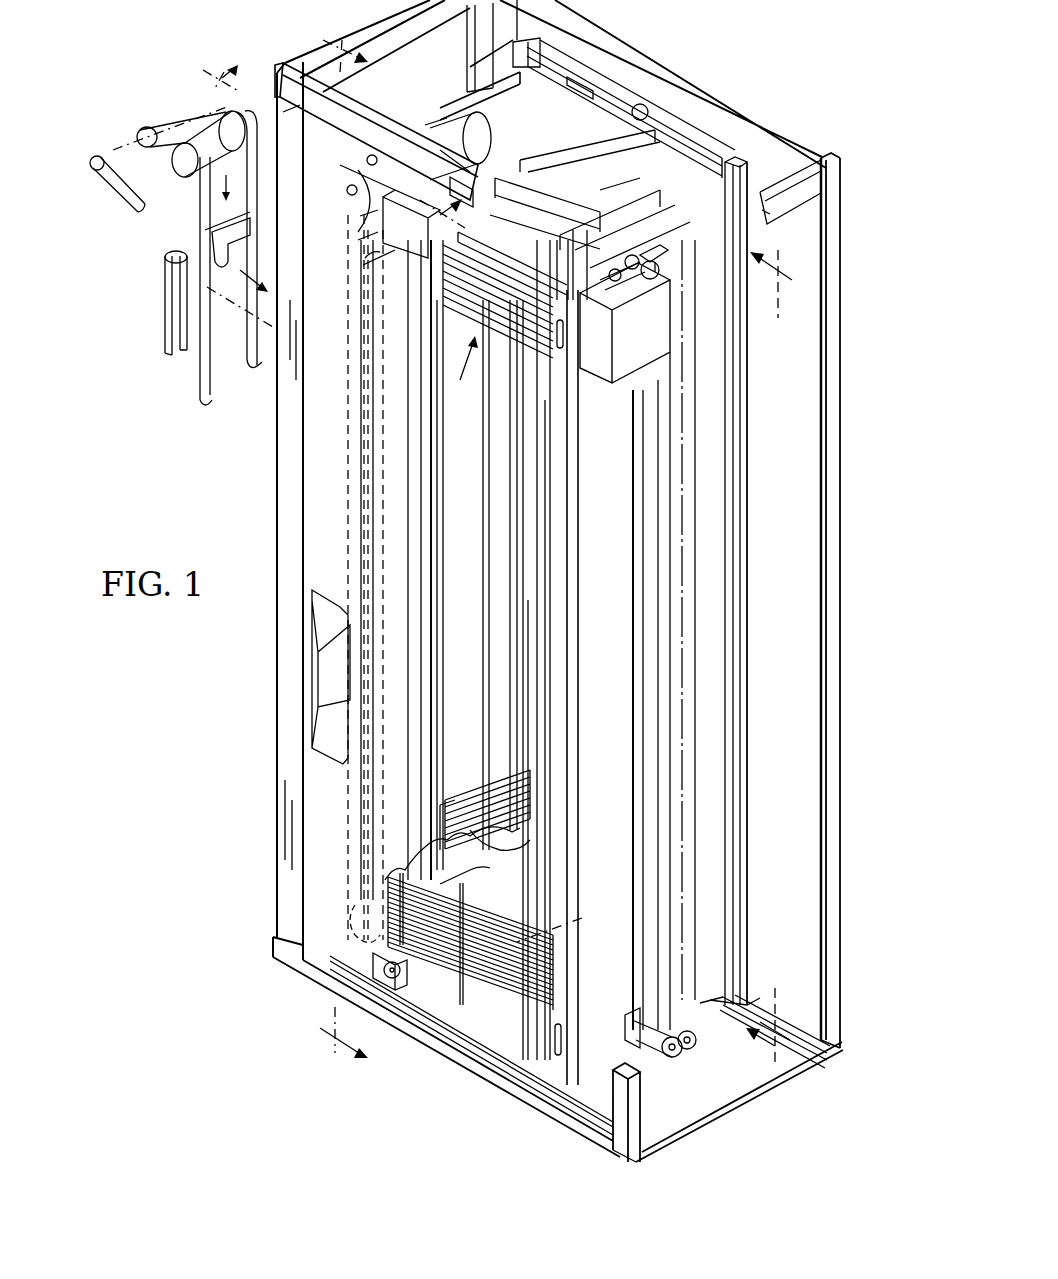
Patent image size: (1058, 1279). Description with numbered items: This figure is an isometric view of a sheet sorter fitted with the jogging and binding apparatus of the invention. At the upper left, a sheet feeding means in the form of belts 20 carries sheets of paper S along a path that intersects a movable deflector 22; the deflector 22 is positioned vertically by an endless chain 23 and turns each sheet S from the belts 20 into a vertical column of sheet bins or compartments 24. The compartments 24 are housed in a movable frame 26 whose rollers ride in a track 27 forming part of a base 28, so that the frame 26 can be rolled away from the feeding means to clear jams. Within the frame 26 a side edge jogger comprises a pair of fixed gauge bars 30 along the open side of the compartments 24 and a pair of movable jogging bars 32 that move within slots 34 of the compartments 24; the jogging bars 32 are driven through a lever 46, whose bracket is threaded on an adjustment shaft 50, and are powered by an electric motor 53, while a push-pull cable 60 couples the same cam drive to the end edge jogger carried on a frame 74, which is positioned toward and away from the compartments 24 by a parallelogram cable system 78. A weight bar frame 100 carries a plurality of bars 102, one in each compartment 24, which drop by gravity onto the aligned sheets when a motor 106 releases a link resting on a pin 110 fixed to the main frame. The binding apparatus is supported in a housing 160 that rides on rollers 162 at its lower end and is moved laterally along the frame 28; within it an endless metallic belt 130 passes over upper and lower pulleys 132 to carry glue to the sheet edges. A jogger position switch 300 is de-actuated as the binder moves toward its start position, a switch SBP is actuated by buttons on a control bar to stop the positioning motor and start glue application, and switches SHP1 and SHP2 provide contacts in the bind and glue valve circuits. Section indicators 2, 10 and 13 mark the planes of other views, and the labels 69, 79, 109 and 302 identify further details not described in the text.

The section line 10- 10 is at (337, 541).
The section line 13-13 / sheet path 13 is at (295, 226).
The switch SBP is at (283, 112).
The sheets of paper S is at (197, 107).
The belts 20 is at (210, 395).
The movable deflector 22 is at (240, 290).
The endless chain 23 is at (165, 323).
The jogger position switch 300 is at (358, 162).
The switch SHP-2 SHP2 is at (361, 216).
The switch SHP-1 SHP1 is at (358, 240).
The upper and lower pulleys 132 is at (360, 266).
The endless metallic belt 130 is at (348, 525).
The top beam 109 is at (403, 160).
The weight bar motor 106 is at (457, 117).
The lever 46 is at (487, 166).
The adjustment shaft 50 is at (640, 106).
The frame 74 is at (607, 177).
The push-pull cable 60 is at (673, 275).
The electric motor 53 is at (630, 305).
The roller bracket 302 is at (650, 281).
The section line 2- 2 is at (772, 660).
The movable jogging bars 32 is at (481, 523).
The weight bar frame 100 is at (583, 597).
The parallelogram cable system 78 is at (697, 484).
The guide slot 79 is at (685, 517).
The pin 110 is at (311, 694).
The housing 160 is at (296, 843).
The sheet compartments 24 is at (470, 778).
The tray support 69 is at (451, 800).
The fixed gauge bars 30 is at (442, 884).
The slots 34 is at (502, 848).
The weight bars 102 is at (479, 910).
The rollers 162 is at (391, 1012).
The movable frame 26 is at (753, 908).
The track 27 is at (757, 1008).
The base 28 is at (780, 1090).